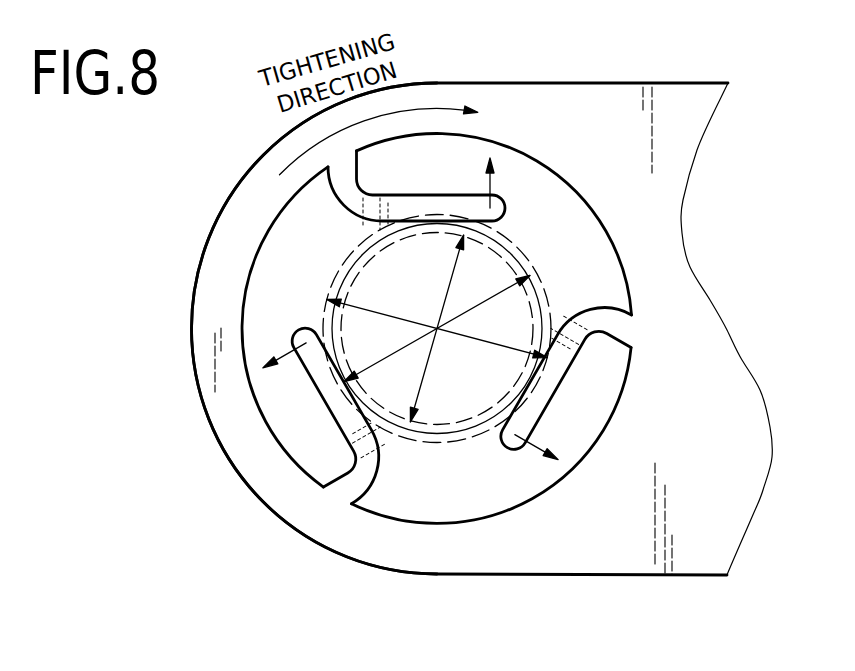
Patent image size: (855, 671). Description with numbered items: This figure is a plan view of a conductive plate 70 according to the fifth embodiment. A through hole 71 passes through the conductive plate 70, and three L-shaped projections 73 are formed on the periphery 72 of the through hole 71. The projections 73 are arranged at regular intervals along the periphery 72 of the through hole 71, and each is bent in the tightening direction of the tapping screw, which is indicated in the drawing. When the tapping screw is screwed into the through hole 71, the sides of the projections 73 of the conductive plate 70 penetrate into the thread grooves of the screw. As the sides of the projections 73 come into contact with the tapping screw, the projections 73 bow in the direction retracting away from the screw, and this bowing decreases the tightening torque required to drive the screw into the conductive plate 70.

The conductive plate 70 is at (598, 76).
The through hole 71 is at (293, 258).
The periphery 72 is at (600, 225).
The L-shaped projections 73 is at (347, 182).